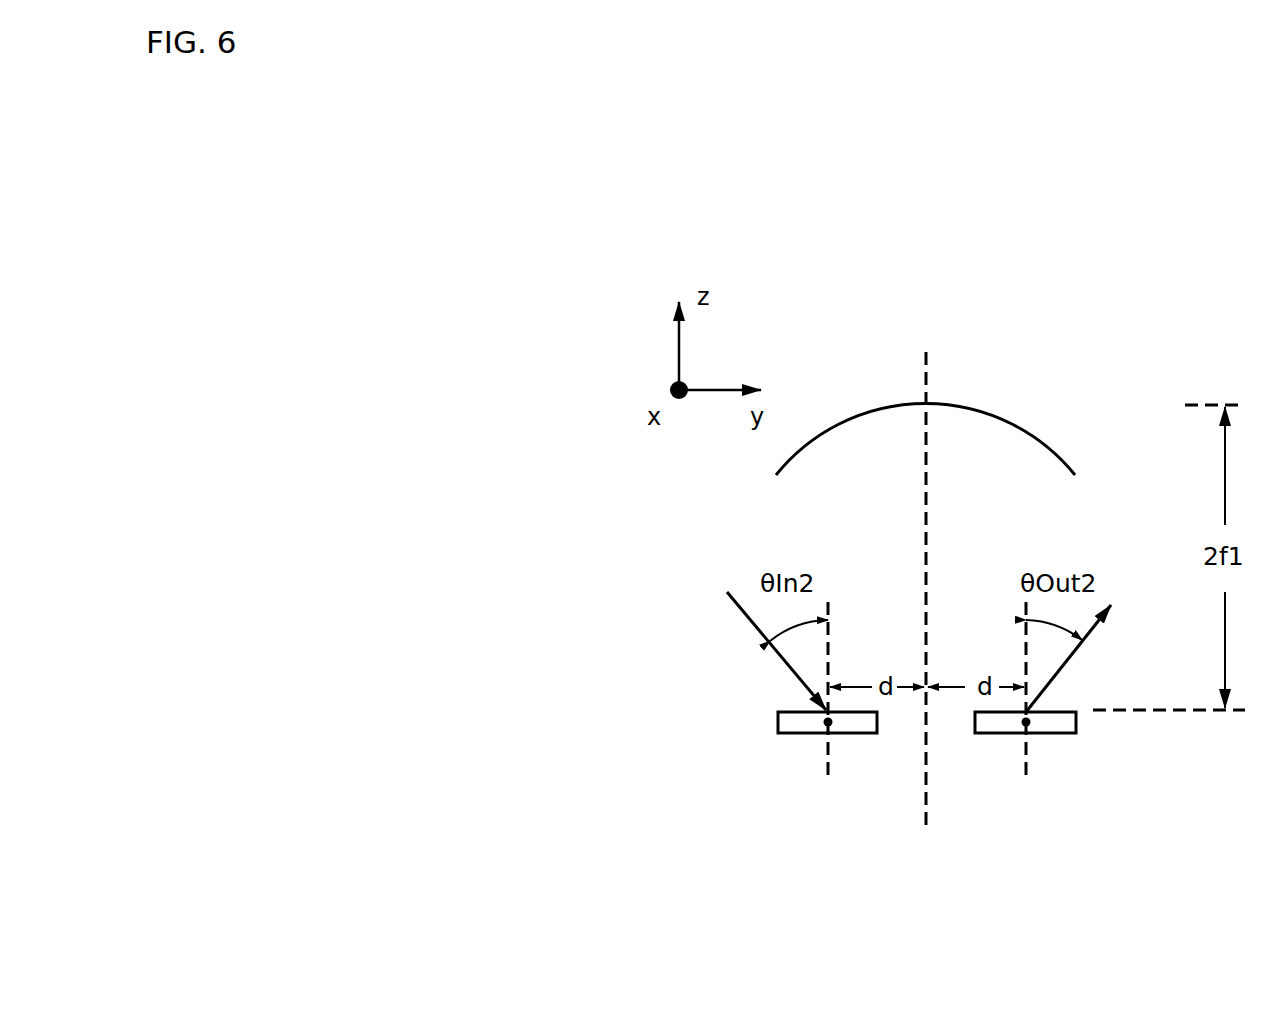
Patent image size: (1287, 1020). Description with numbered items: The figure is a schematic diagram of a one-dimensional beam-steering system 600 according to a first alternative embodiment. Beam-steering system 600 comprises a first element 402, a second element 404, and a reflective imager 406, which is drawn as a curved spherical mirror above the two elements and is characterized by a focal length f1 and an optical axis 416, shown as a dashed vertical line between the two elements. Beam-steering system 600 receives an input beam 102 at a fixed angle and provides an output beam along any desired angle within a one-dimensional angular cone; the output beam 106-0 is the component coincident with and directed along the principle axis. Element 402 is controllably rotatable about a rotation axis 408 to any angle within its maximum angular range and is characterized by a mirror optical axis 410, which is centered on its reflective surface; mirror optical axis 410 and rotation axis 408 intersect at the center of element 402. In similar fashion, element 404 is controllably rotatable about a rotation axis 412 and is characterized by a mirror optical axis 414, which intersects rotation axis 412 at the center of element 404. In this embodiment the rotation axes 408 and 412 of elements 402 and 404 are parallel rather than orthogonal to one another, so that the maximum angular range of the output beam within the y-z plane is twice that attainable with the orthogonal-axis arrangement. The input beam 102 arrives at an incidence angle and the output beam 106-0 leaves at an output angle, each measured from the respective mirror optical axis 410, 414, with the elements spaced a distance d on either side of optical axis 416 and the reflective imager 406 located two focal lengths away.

The beam-steering system 600 is at (540, 290).
The input beam 102 is at (740, 651).
The output beam 106-0 is at (1107, 658).
The element 402 is at (770, 754).
The element 404 is at (1089, 749).
The reflective imager 406 is at (939, 413).
The rotation axis 408 is at (748, 781).
The mirror optical axis 410 is at (745, 747).
The rotation axis 412 is at (1112, 777).
The mirror optical axis 414 is at (1114, 744).
The optical axis 416 is at (982, 591).